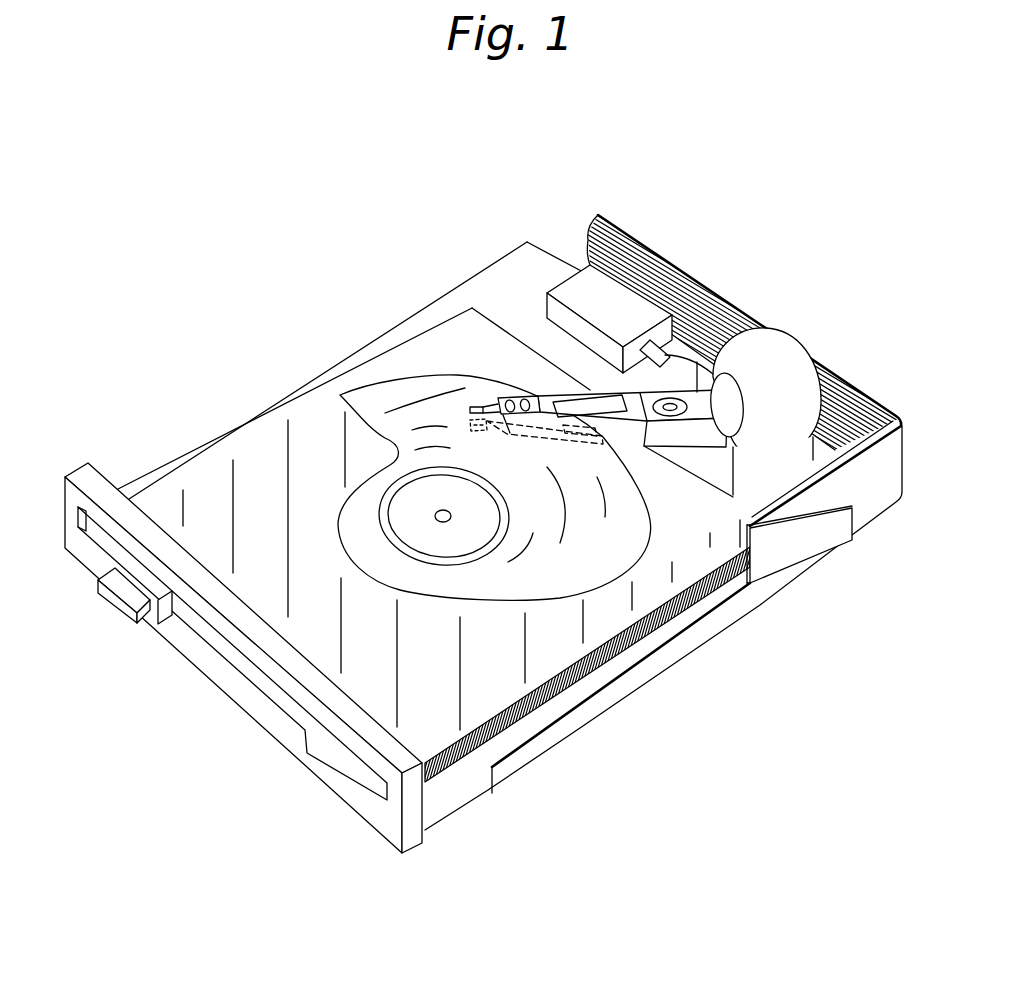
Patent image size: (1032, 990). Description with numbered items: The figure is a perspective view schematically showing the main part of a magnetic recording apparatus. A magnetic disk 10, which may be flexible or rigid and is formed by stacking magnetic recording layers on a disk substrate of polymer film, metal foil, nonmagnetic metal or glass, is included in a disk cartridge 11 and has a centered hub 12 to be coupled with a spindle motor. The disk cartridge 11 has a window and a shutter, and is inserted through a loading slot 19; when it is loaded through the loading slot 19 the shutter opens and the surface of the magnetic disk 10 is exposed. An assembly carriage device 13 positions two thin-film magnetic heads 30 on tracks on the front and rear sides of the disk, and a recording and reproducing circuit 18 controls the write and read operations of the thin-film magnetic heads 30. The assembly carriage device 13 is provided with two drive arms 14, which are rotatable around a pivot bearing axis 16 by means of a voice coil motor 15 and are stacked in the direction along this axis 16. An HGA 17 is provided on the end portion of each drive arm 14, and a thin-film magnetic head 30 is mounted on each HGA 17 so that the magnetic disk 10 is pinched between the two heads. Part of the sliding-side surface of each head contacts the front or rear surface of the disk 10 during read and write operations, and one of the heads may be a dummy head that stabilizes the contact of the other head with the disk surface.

The magnetic disk 10 is at (390, 400).
The disk cartridge 11 is at (255, 450).
The hub 12 is at (458, 537).
The assembly carriage device 13 is at (768, 362).
The drive arms 14 is at (640, 393).
The voice coil motor (VCM) 15 is at (733, 410).
The pivot bearing axis 16 is at (667, 408).
The HGA 17 is at (520, 397).
The recording and reproducing circuit 18 is at (605, 300).
The loading slot 19 is at (333, 740).
The thin-film magnetic heads 30 is at (476, 421).